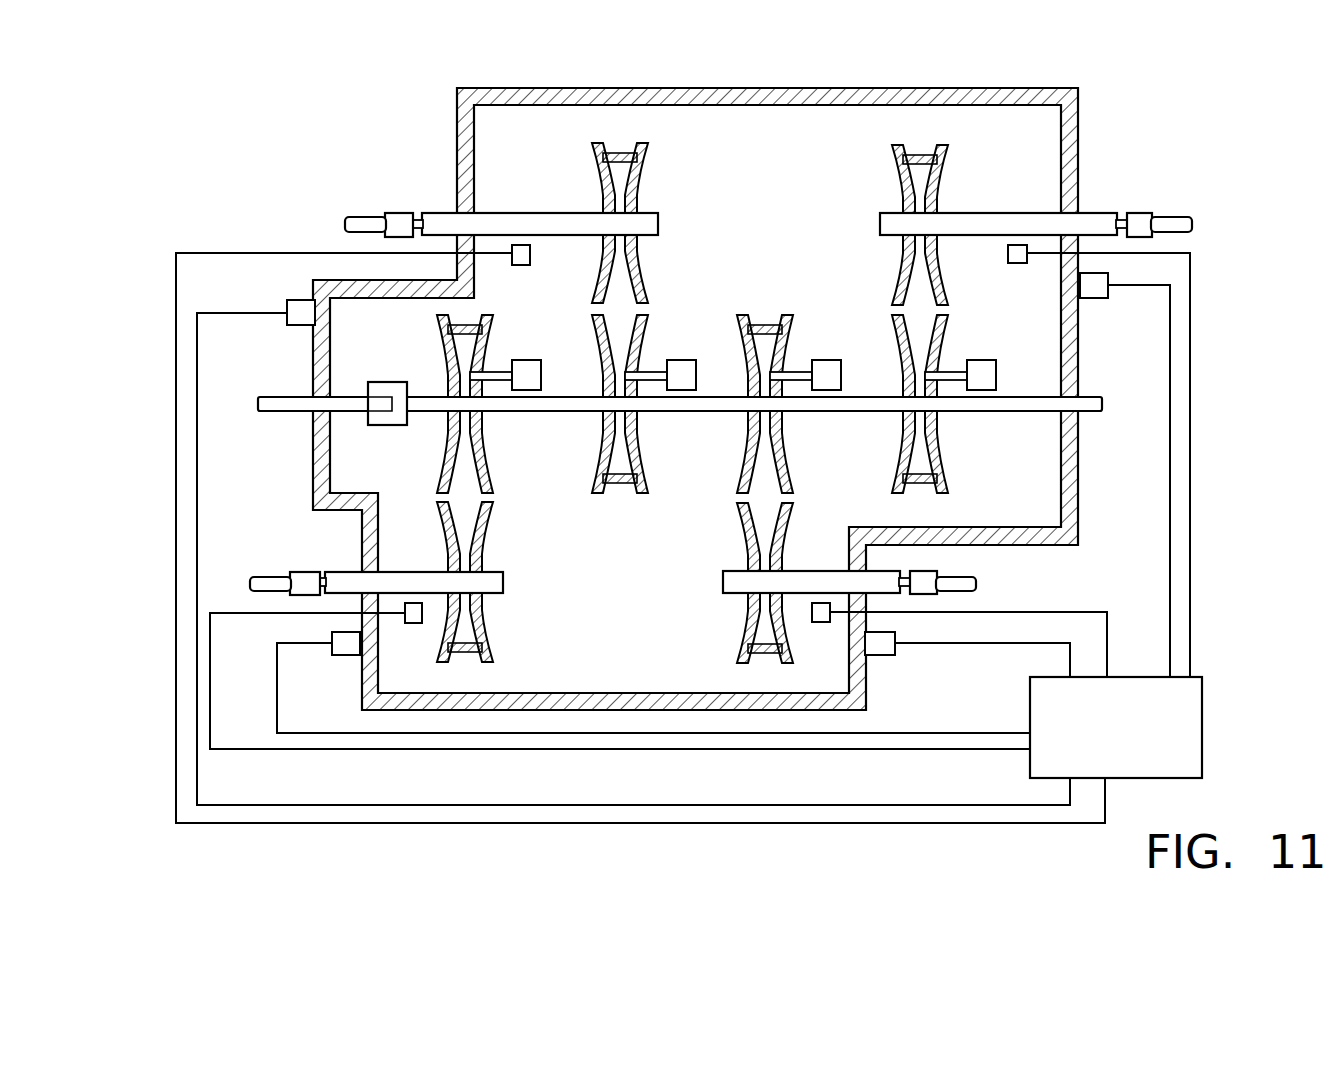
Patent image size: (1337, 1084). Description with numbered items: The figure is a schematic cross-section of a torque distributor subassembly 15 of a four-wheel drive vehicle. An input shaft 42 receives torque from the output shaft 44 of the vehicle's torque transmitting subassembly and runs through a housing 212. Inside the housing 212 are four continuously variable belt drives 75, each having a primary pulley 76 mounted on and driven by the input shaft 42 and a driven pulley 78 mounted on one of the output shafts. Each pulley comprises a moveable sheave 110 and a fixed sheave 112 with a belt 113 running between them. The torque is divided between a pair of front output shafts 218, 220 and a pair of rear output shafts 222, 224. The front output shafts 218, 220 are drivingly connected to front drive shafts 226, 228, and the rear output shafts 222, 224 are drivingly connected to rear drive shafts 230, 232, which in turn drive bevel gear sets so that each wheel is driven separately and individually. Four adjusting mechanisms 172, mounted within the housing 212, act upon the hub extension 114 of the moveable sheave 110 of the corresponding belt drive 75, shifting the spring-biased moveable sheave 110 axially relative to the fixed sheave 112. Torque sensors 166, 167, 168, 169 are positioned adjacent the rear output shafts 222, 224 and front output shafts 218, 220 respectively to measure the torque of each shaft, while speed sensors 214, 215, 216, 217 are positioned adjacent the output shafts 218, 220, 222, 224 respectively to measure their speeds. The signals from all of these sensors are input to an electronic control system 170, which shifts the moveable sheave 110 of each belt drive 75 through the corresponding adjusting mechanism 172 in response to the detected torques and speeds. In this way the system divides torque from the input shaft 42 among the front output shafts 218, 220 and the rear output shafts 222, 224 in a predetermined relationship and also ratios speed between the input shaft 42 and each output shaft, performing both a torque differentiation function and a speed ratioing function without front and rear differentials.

The torque distributor subassembly 15 is at (695, 373).
The housing 212 is at (745, 88).
The continuously variable belt drive 75 is at (695, 403).
The driven pulley 78 is at (652, 183).
The primary pulley 76 is at (692, 414).
The moveable sheave 110 is at (446, 448).
The fixed sheave 112 is at (487, 437).
The belt 113 is at (627, 152).
The hub extension 114 is at (497, 372).
The adjusting mechanism 172 is at (530, 360).
The input shaft 42 is at (432, 395).
The output shaft 44 is at (288, 396).
The front output shaft 220 is at (437, 212).
The rear output shaft 222 is at (989, 212).
The front output shaft 218 is at (392, 572).
The rear output shaft 224 is at (790, 571).
The front drive shaft 228 is at (365, 214).
The rear drive shaft 230 is at (1170, 216).
The front drive shaft 226 is at (268, 577).
The rear drive shaft 232 is at (976, 580).
The speed sensor 214 is at (408, 625).
The speed sensor 215 is at (520, 266).
The speed sensor 216 is at (1010, 265).
The speed sensor 217 is at (822, 624).
The torque sensor 166 is at (1095, 299).
The torque sensor 167 is at (890, 657).
The torque sensor 168 is at (347, 657).
The torque sensor 169 is at (298, 300).
The electronic control system 170 is at (1205, 728).